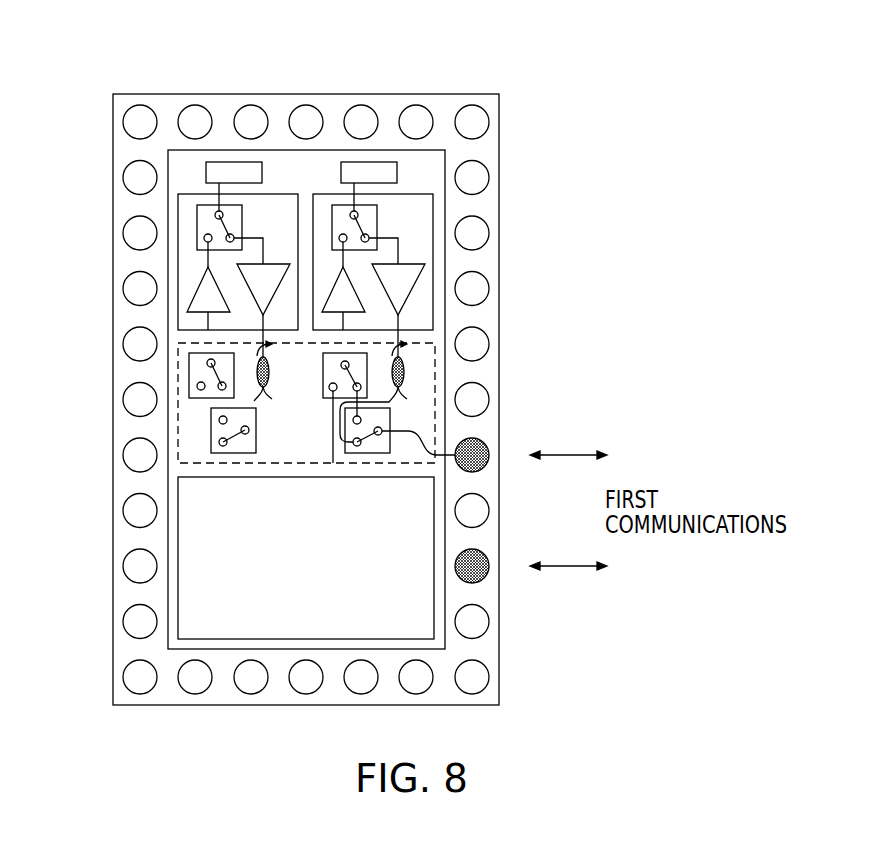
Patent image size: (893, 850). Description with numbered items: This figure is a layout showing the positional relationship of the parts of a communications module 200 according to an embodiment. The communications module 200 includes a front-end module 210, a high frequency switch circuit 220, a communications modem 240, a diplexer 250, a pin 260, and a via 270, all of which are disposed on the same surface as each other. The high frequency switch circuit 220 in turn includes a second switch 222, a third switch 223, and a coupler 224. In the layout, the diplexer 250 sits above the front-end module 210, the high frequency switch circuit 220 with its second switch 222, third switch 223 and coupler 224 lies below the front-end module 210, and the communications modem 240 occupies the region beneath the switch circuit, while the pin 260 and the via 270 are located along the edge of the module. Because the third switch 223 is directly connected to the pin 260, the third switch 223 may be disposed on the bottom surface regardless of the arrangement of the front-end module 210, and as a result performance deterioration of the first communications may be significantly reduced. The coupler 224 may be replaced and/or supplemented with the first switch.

The communications module 200 is at (504, 28).
The front-end module 210 is at (445, 261).
The high frequency switch circuit 220 is at (435, 373).
The second switch 222 is at (189, 373).
The third switch 223 is at (211, 430).
The coupler 224 is at (257, 363).
The communications modem 240 is at (434, 595).
The diplexer 250 is at (397, 172).
The pin 260 is at (480, 563).
The via 270 is at (480, 509).